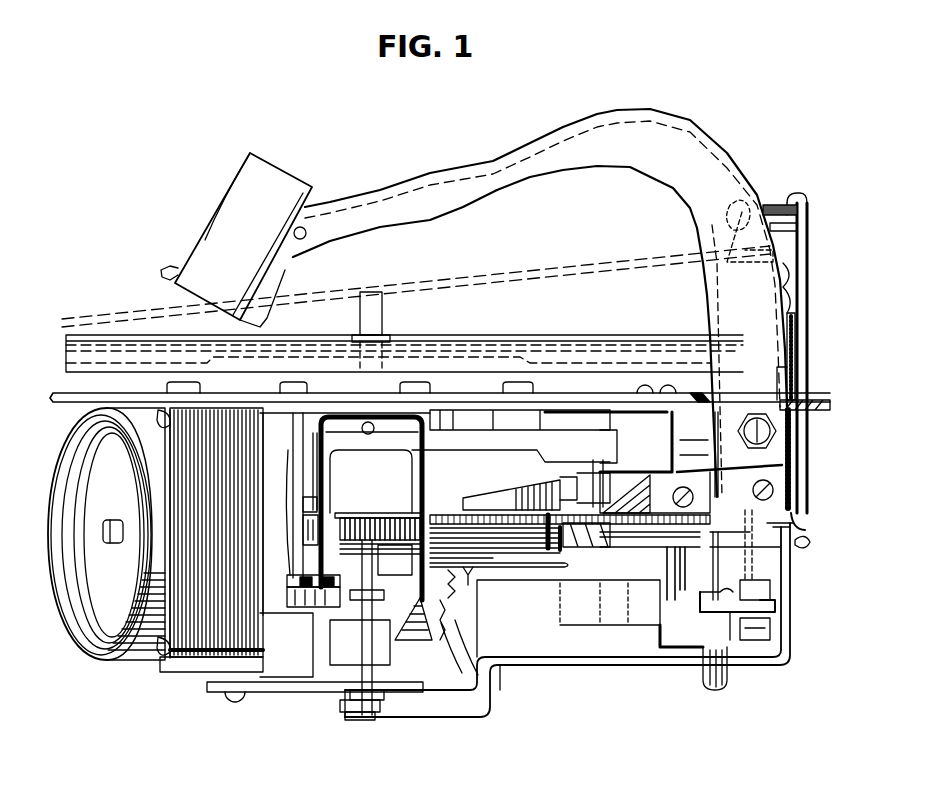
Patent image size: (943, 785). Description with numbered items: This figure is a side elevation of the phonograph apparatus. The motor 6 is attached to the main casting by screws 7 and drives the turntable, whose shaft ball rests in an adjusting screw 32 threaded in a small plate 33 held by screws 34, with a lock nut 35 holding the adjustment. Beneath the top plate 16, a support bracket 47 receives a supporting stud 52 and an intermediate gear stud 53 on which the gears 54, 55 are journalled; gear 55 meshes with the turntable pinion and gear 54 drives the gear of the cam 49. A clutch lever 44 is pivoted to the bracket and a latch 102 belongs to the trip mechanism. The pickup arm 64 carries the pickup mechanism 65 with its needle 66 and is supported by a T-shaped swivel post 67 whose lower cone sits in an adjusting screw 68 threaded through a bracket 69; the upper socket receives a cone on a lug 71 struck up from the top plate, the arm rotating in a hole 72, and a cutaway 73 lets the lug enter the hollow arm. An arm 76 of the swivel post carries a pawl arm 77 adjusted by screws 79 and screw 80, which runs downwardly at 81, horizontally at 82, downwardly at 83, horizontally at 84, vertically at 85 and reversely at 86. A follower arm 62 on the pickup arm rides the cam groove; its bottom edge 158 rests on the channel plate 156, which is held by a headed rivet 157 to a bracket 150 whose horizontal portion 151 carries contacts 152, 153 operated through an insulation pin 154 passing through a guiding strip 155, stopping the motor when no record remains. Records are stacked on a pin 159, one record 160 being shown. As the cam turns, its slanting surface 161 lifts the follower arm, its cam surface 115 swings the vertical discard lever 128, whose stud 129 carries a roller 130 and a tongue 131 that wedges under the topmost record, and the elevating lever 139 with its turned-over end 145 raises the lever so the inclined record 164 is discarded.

The motor 6 is at (95, 647).
The screws 7 is at (157, 650).
The top plate 16 is at (578, 402).
The adjusting screw 32 is at (353, 718).
The small plate 33 is at (215, 692).
The screws 34 is at (235, 697).
The lock nut 35 is at (347, 703).
The clutch lever 44 is at (463, 677).
The support bracket 47 is at (320, 560).
The cam 49 is at (627, 625).
The supporting stud 52 is at (305, 460).
The intermediate gear stud 53 is at (378, 562).
The gear 54 is at (320, 523).
The gear 55 is at (317, 547).
The follower arm 62 is at (653, 478).
The pickup arm 64 is at (490, 163).
The pickup mechanism 65 is at (207, 227).
The needle 66 is at (203, 330).
The swivel post 67 is at (797, 440).
The adjusting screw 68 is at (780, 633).
The bracket 69 is at (777, 607).
The lug 71 is at (797, 390).
The hole 72 is at (713, 398).
The cutaway part 73 is at (787, 370).
The arm 76 is at (773, 527).
The pawl arm 77 is at (772, 684).
The screws 79 is at (793, 557).
The screw 80 is at (810, 540).
The downward portion 81 is at (790, 587).
The horizontal portion 82 is at (640, 668).
The downward portion 83 is at (505, 695).
The horizontal portion 84 is at (443, 713).
The vertical portion 85 is at (357, 643).
The projection 86 is at (377, 540).
The latch 102 is at (413, 640).
The cam surface 115 is at (667, 540).
The vertical discard lever 128 is at (807, 280).
The stud 129 is at (773, 202).
The roller 130 is at (740, 196).
The tongue 131 is at (783, 247).
The elevating lever 139 is at (729, 677).
The turned-over end 145 is at (680, 637).
The bracket 150 is at (430, 442).
The horizontal portion 151 is at (450, 513).
The contact 152 is at (528, 550).
The contact 153 is at (520, 547).
The insulation pin 154 is at (567, 550).
The guiding strip 155 is at (512, 527).
The channel plate 156 is at (600, 533).
The headed rivet 157 is at (590, 540).
The bottom edge 158 is at (627, 537).
The pin 159 is at (383, 312).
The record 160 is at (551, 341).
The slanting surface 161 is at (643, 478).
The inclined record 164 is at (601, 262).